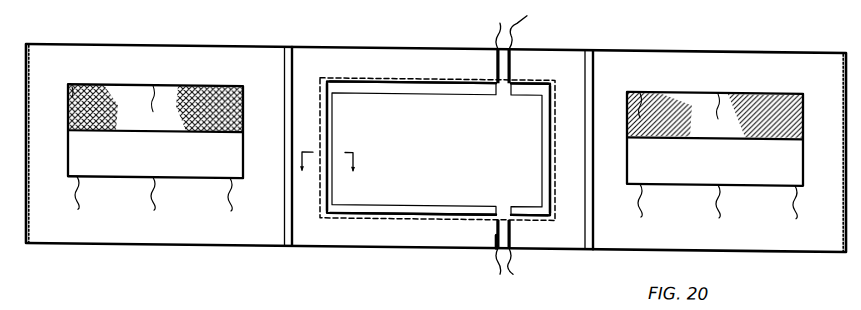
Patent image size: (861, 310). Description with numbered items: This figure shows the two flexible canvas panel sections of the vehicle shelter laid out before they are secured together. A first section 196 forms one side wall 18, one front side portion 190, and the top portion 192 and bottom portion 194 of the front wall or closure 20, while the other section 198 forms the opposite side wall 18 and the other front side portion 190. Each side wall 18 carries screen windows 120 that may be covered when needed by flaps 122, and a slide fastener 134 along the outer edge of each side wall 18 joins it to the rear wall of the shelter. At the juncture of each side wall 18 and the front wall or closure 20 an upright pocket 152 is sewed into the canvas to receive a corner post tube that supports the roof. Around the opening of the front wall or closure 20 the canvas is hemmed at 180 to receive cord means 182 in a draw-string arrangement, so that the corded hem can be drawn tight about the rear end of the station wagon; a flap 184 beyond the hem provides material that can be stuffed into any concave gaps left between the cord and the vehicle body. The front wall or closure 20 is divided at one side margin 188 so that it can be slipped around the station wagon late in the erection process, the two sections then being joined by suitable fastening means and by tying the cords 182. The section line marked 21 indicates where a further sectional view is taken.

The side wall 18 is at (193, 56).
The slide fastener 134 is at (27, 215).
The upright pocket 152 is at (290, 77).
The first section 196 is at (162, 76).
The screen window 120 is at (147, 104).
The flap 122 is at (176, 163).
The other section 198 is at (724, 79).
The hem 180 is at (374, 74).
The front wall or closure 20 is at (450, 44).
The top portion 192 is at (458, 68).
The bottom portion 194 is at (401, 235).
The side portion 190 is at (320, 208).
The flap 184 is at (379, 90).
The cord means 182 is at (528, 151).
The side margin 188 is at (496, 243).
The section line 21 is at (338, 150).